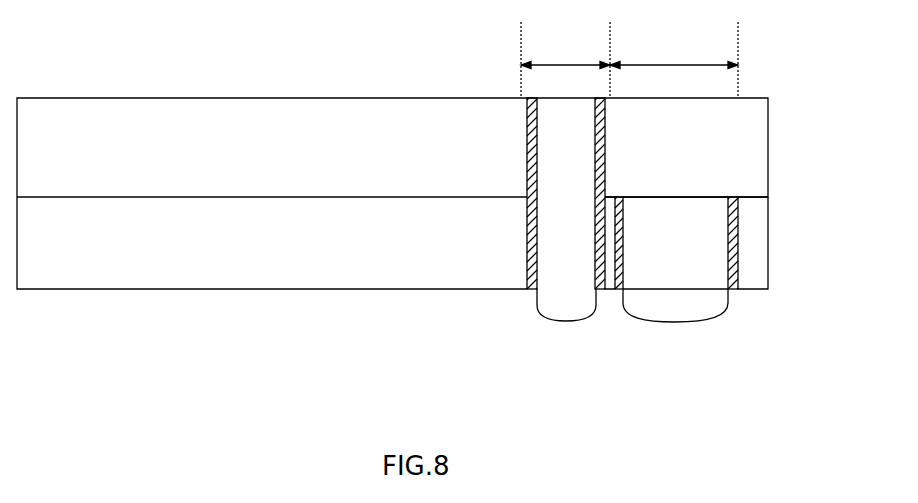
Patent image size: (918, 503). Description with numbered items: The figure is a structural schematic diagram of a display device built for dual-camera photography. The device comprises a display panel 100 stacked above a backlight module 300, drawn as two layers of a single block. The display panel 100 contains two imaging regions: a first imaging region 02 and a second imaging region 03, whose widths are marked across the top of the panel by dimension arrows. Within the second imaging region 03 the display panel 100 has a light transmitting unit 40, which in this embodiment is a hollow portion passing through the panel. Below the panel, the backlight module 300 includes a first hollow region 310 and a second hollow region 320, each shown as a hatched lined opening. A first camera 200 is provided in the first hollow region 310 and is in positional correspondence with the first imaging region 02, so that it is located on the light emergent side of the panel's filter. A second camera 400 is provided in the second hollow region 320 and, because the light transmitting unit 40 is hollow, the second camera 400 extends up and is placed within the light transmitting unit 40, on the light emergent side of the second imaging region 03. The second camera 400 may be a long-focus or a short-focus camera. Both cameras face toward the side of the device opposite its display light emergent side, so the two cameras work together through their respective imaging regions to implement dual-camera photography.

The display panel 100 is at (727, 138).
The backlight module 300 is at (768, 243).
The light transmitting unit 40 is at (528, 135).
The second hollow region 320 is at (532, 290).
The second camera 400 is at (560, 320).
The first camera 200 is at (682, 322).
The first hollow region 310 is at (730, 290).
The second imaging region 03 is at (565, 60).
The first imaging region 02 is at (674, 60).